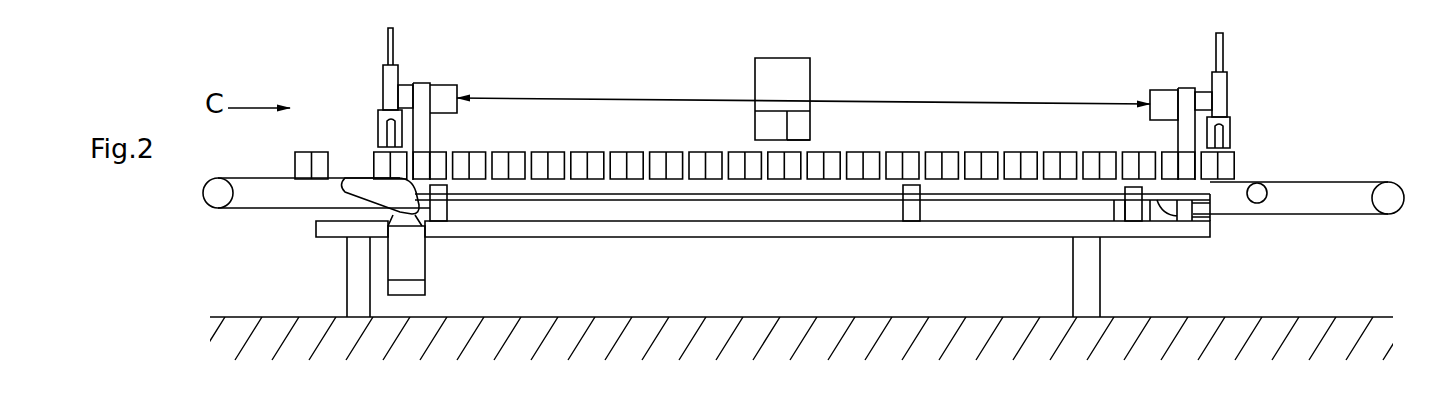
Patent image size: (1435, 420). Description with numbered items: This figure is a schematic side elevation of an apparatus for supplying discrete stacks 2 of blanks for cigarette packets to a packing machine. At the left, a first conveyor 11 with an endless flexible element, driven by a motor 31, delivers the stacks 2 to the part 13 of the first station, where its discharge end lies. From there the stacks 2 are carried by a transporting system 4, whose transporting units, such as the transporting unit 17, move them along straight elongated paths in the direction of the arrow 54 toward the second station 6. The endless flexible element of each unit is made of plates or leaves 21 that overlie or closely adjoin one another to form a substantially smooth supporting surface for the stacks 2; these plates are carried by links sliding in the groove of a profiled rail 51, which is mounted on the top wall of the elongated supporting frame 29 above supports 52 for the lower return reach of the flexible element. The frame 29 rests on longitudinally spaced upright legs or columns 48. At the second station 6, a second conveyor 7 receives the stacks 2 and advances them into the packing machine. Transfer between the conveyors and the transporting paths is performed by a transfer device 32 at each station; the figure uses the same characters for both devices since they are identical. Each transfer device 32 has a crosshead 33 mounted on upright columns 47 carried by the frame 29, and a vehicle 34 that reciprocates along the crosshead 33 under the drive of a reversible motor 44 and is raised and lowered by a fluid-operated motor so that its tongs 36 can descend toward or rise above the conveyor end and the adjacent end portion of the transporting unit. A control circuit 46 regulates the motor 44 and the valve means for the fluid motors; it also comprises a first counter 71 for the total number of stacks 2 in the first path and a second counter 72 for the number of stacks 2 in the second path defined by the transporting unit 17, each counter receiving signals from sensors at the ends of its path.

The stacks 2 is at (1017, 162).
The transporting system 4 is at (902, 137).
The second station 6 is at (1290, 130).
The second conveyor 7 is at (1317, 215).
The first conveyor 11 is at (245, 208).
The part of the first station 13 is at (467, 78).
The transporting unit 17 is at (1238, 203).
The plates or leaves 21 is at (333, 194).
The supporting frame 29 is at (778, 230).
The motor 31 is at (417, 272).
The transfer device 32 is at (808, 80).
The crosshead 33 is at (403, 90).
The vehicle 34 is at (393, 73).
The tongs 36 is at (380, 133).
The motor 44 is at (457, 93).
The control circuit 46 is at (757, 73).
The columns 47 is at (423, 133).
The legs or columns 48 is at (353, 293).
The profiled rail 51 is at (855, 190).
The supports 52 is at (643, 217).
The arrow 54 is at (592, 143).
The first counter 71 is at (770, 127).
The second counter 72 is at (802, 124).